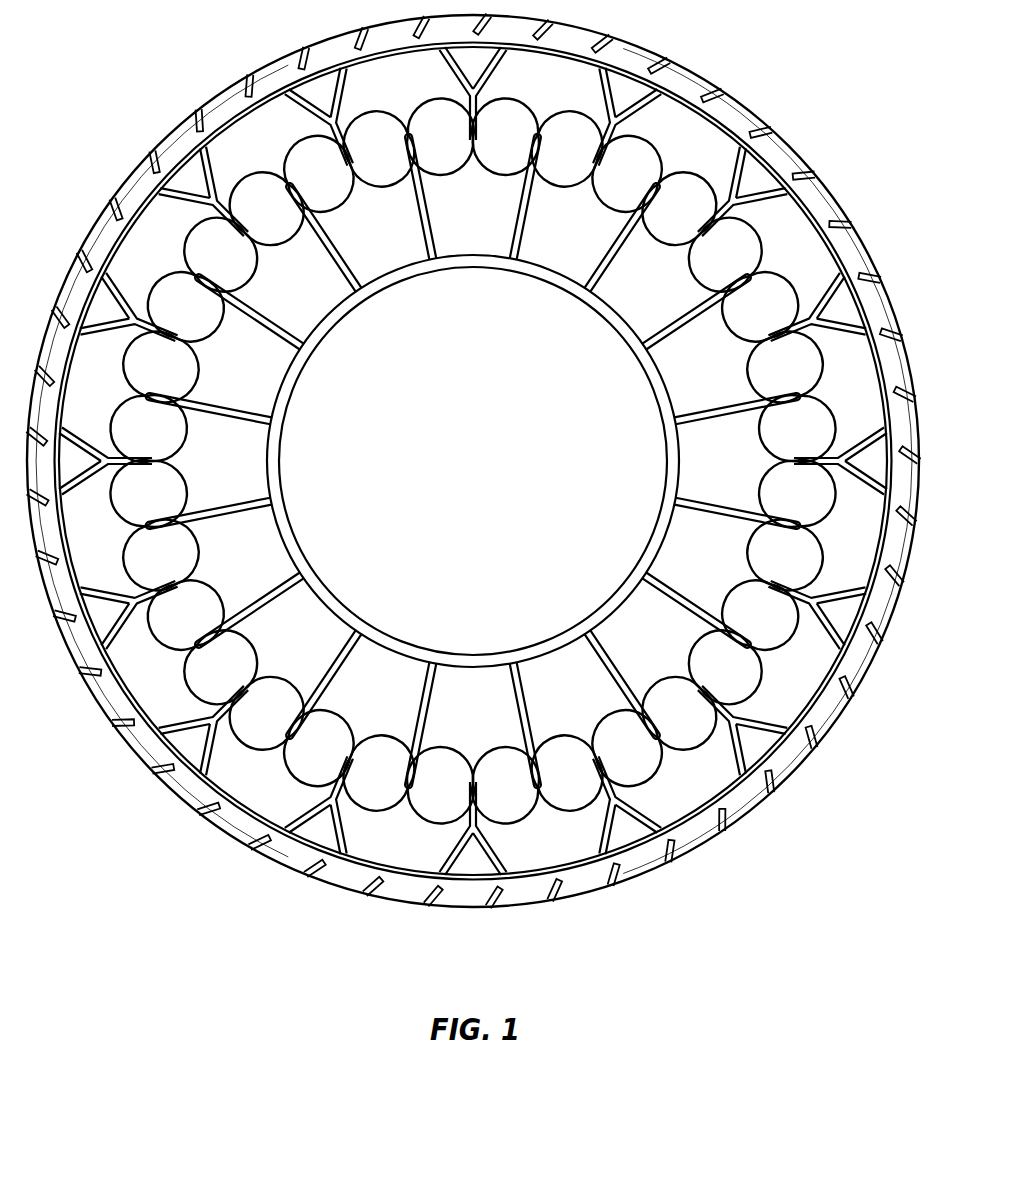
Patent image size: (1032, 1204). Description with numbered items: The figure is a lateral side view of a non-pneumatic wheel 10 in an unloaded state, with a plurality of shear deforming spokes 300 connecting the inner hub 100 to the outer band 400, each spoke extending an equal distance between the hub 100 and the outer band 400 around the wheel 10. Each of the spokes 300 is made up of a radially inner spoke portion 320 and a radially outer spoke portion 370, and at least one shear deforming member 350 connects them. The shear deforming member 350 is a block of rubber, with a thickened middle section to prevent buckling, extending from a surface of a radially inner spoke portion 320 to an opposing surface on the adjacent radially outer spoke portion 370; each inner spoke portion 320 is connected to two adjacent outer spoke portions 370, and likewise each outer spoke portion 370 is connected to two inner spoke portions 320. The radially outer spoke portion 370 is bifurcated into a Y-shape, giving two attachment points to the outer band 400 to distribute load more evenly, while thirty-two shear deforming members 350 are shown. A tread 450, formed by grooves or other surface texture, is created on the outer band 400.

The non-pneumatic wheel 10 is at (106, 53).
The inner hub 100 is at (497, 479).
The shear deforming spokes 300 is at (762, 678).
The radially inner spoke portion 320 is at (528, 710).
The shear deforming member 350 is at (627, 758).
The radially outer spoke portion 370 is at (607, 783).
The outer band 400 is at (638, 863).
The tread 450 is at (728, 98).